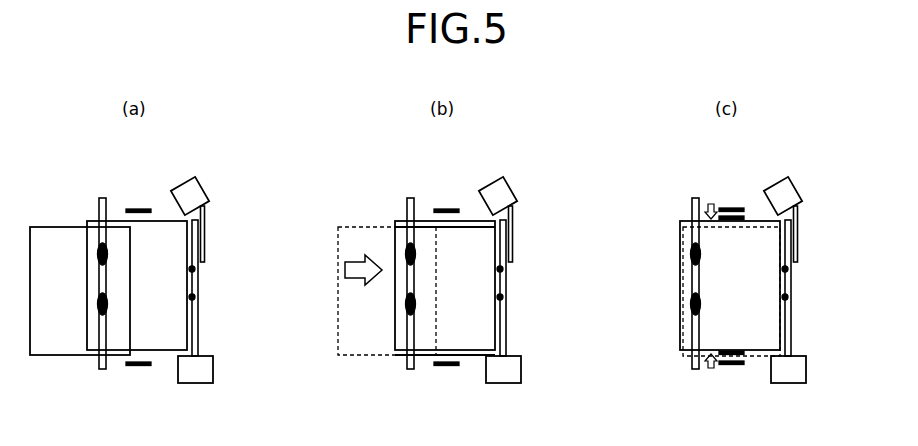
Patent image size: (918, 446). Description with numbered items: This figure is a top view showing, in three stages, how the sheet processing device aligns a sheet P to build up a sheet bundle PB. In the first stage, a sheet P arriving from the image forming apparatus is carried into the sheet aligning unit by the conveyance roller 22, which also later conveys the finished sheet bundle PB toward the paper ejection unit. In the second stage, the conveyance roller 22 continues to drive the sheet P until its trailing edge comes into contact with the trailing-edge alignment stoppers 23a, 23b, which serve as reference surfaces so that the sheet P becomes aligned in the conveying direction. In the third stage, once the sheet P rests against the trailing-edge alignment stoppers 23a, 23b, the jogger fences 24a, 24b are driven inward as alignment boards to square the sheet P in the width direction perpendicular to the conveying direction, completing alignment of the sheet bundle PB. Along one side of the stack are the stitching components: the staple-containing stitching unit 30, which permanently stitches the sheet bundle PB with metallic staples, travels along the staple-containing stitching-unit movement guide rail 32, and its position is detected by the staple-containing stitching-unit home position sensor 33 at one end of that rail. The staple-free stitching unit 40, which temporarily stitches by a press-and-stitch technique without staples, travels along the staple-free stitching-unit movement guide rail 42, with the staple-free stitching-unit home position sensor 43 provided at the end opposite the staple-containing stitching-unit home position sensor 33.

The sheet P is at (367, 226).
The sheet bundle PB is at (170, 228).
The conveyance roller 22 is at (100, 365).
The trailing-edge alignment stopper 23a is at (195, 268).
The trailing-edge alignment stopper 23b is at (195, 297).
The jogger fence 24a is at (135, 207).
The jogger fence 24b is at (138, 368).
The staple-containing stitching unit 30 is at (203, 360).
The staple-containing stitching-unit movement guide rail 32 is at (200, 335).
The staple-containing stitching-unit home position sensor 33 is at (216, 378).
The staple-free stitching unit 40 is at (198, 190).
The staple-free stitching-unit movement guide rail 42 is at (205, 225).
The staple-free stitching-unit home position sensor 43 is at (203, 180).